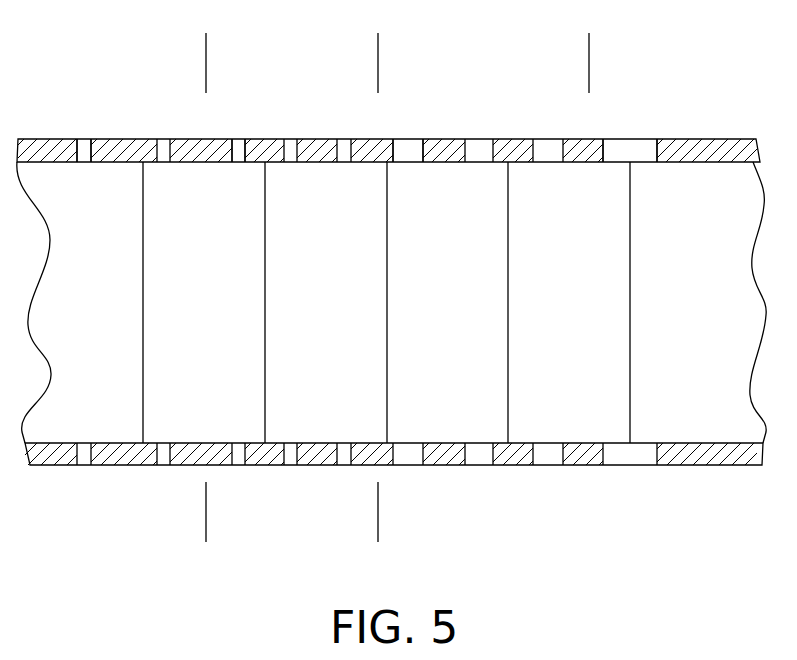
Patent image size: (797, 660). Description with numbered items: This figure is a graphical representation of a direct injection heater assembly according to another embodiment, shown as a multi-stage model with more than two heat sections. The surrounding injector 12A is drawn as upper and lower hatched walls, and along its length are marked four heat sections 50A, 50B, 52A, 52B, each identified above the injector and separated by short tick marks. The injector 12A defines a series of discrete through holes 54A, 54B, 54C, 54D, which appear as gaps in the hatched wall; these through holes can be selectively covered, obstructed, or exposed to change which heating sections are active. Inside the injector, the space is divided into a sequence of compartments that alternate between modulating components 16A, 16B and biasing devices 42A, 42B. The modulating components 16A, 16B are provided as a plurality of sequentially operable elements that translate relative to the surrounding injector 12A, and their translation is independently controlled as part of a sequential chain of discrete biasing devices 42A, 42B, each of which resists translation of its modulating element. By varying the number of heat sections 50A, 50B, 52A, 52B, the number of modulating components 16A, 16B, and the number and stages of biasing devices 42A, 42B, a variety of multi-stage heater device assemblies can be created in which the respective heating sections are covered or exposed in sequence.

The injector 12A is at (112, 465).
The modulating component 16A is at (228, 313).
The modulating component 16B is at (474, 313).
The biasing device 42A is at (358, 313).
The biasing device 42B is at (598, 313).
The heat section 50A is at (162, 73).
The heat section 50B is at (318, 73).
The heat section 52A is at (503, 73).
The heat section 52B is at (695, 73).
The through hole 54A is at (82, 148).
The through hole 54B is at (236, 150).
The through hole 54C is at (406, 150).
The through hole 54D is at (638, 151).